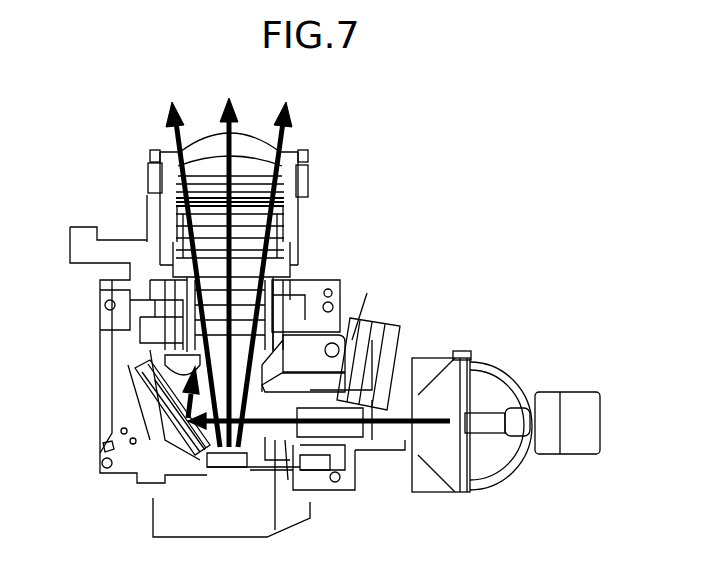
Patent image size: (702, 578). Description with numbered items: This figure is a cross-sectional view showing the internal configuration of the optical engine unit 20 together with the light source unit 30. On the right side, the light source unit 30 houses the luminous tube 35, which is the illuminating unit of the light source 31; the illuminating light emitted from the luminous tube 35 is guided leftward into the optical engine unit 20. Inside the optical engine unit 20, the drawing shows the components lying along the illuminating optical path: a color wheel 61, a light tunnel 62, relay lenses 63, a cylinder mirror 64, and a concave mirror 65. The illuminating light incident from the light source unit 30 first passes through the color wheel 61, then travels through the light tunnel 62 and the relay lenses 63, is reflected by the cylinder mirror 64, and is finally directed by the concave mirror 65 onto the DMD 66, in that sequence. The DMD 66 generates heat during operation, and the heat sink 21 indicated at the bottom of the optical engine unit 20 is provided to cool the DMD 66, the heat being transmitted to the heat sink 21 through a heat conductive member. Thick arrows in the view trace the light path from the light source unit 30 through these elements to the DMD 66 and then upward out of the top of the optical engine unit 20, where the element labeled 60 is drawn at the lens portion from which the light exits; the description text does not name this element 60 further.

The optical engine unit 20 is at (46, 182).
The heat sink 21 is at (170, 513).
The light source unit 30 is at (530, 495).
The light source 31 is at (555, 390).
The luminous tube 35 is at (488, 412).
The projection light 60 is at (262, 134).
The color wheel 61 is at (395, 345).
The light tunnel 62 is at (343, 436).
The relay lenses 63 is at (280, 460).
The cylinder mirror 64 is at (167, 412).
The concave mirror 65 is at (177, 377).
The DMD 66 is at (223, 462).